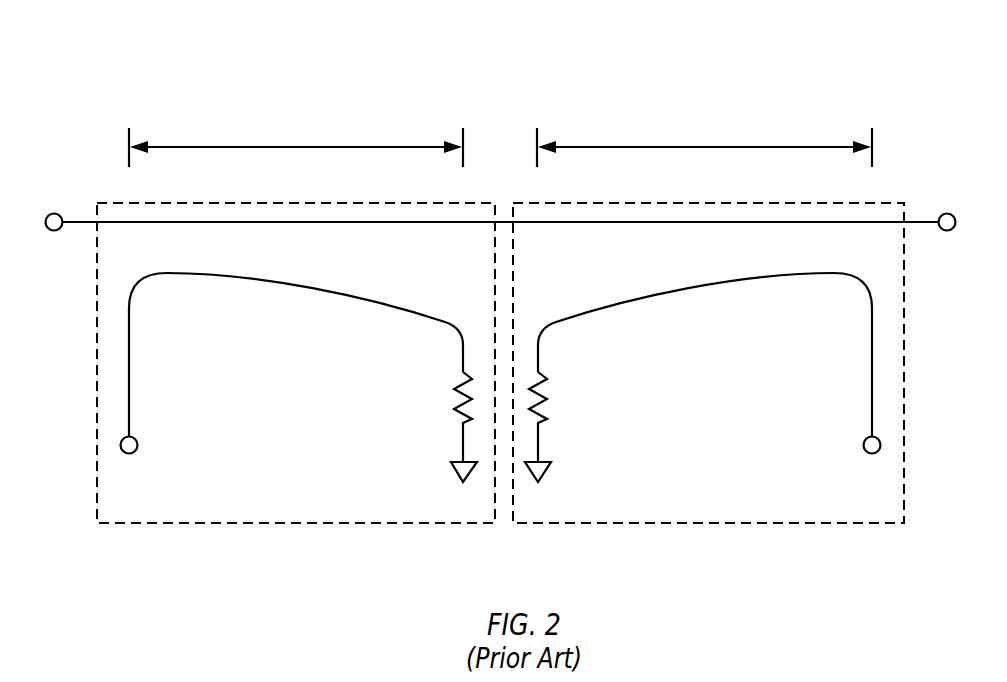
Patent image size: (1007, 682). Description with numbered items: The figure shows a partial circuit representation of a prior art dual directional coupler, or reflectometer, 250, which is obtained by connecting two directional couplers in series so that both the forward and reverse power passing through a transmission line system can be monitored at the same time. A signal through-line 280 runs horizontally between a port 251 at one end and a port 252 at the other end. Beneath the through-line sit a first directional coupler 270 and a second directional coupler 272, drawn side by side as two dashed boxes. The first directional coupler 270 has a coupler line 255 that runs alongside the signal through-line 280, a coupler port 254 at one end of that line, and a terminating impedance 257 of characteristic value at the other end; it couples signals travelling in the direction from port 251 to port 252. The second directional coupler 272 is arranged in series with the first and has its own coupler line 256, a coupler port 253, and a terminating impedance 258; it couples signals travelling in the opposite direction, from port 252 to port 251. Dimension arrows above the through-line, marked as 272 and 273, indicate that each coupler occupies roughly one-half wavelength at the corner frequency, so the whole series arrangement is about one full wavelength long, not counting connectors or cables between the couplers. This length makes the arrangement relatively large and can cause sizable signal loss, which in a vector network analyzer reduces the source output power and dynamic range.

The dual directional coupler 250 is at (794, 60).
The port 251 is at (59, 214).
The port 252 is at (943, 216).
The coupler port 253 is at (879, 440).
The coupler port 254 is at (135, 439).
The coupler line 255 is at (263, 278).
The coupler line 256 is at (716, 282).
The terminating impedance 257 is at (458, 423).
The terminating impedance 258 is at (543, 423).
The first directional coupler 270 is at (317, 508).
The second directional coupler 272 is at (770, 508).
The half-wavelength length indication 273 is at (593, 146).
The signal through-line 280 is at (347, 222).